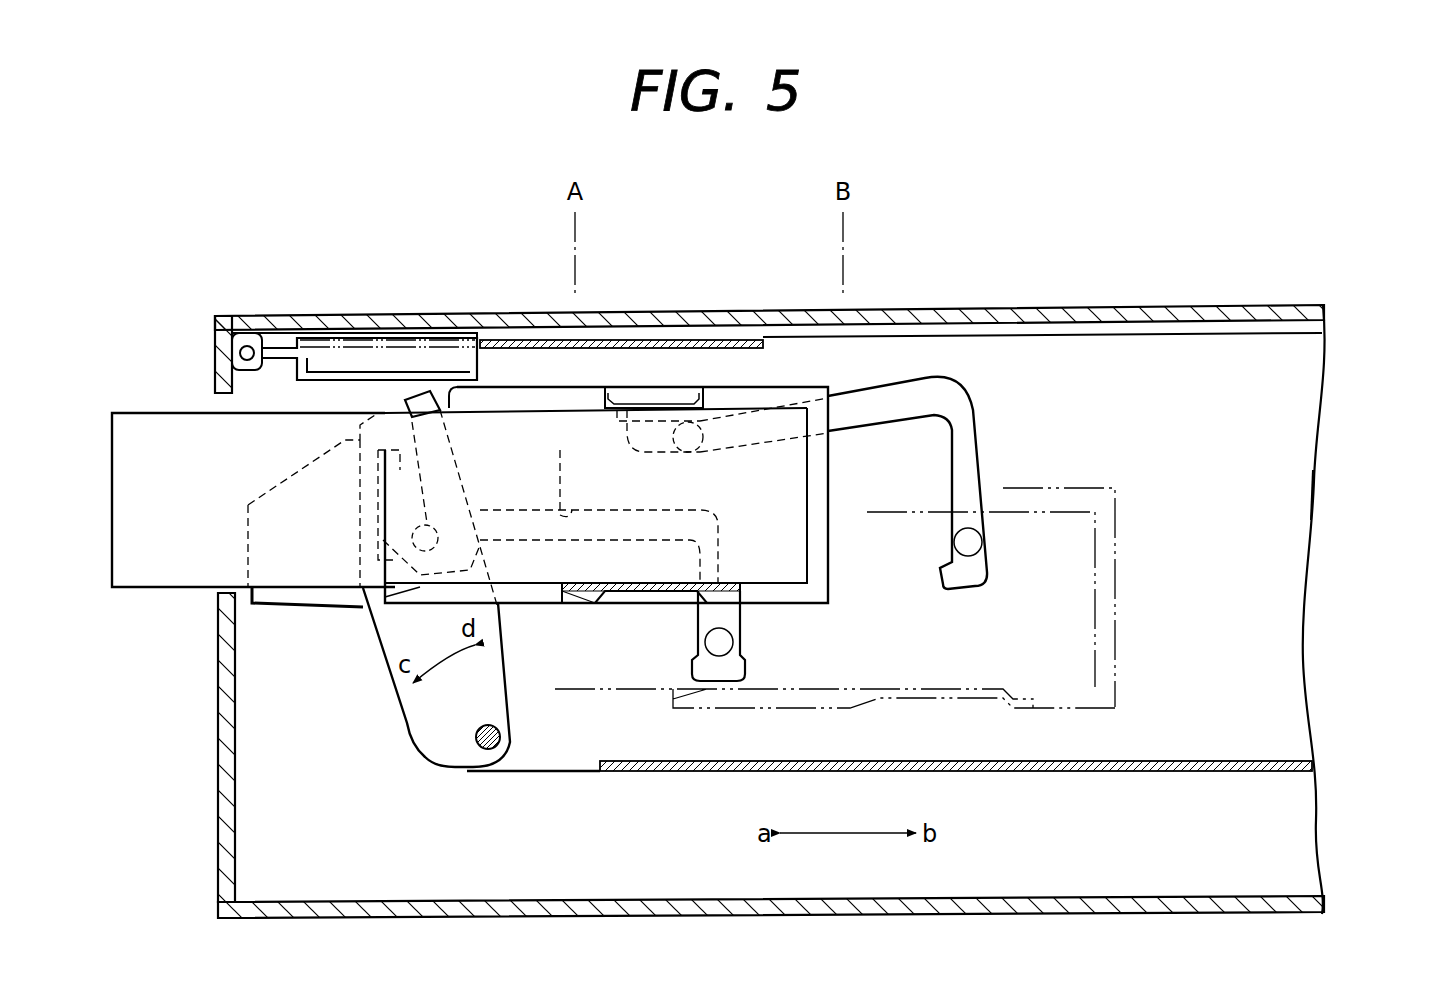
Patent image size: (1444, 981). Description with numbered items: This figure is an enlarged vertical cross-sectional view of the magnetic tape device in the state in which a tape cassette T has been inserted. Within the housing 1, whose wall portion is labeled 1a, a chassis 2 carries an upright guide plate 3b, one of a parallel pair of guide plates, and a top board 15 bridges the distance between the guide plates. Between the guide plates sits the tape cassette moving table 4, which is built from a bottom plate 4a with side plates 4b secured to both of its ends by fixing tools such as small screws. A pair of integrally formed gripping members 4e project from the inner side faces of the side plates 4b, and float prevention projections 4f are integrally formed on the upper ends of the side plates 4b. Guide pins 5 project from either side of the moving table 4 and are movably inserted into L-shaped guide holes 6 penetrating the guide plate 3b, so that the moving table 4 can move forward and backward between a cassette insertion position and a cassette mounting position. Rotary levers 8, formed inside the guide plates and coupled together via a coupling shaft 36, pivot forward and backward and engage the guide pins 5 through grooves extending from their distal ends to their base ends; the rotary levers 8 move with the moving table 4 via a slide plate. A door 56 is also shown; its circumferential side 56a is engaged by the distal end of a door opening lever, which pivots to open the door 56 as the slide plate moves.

The housing 1 is at (1225, 305).
The housing wall portion 1a is at (213, 400).
The chassis 2 is at (628, 775).
The guide plate 3b is at (1296, 486).
The tape cassette moving table 4 is at (842, 570).
The bottom plate 4a is at (572, 603).
The side plates 4b is at (830, 472).
The gripping members 4e is at (628, 422).
The float prevention projections 4f is at (667, 392).
The guide pins 5 is at (440, 440).
The L-shaped guide holes 6 is at (972, 447).
The rotary levers 8 is at (407, 725).
The top board 15 is at (655, 340).
The coupling shaft 36 is at (500, 737).
The door 56 is at (358, 365).
The circumferential side of the door 56a is at (445, 338).
The tape cassette T is at (150, 577).